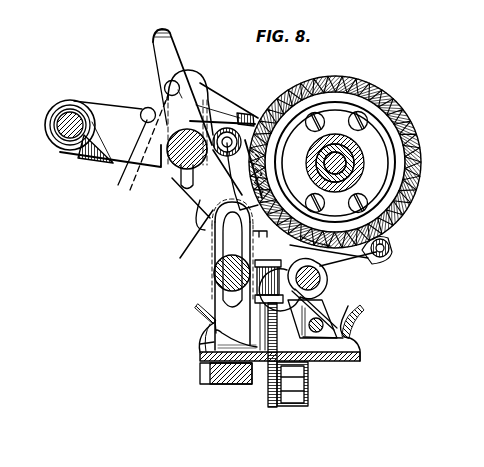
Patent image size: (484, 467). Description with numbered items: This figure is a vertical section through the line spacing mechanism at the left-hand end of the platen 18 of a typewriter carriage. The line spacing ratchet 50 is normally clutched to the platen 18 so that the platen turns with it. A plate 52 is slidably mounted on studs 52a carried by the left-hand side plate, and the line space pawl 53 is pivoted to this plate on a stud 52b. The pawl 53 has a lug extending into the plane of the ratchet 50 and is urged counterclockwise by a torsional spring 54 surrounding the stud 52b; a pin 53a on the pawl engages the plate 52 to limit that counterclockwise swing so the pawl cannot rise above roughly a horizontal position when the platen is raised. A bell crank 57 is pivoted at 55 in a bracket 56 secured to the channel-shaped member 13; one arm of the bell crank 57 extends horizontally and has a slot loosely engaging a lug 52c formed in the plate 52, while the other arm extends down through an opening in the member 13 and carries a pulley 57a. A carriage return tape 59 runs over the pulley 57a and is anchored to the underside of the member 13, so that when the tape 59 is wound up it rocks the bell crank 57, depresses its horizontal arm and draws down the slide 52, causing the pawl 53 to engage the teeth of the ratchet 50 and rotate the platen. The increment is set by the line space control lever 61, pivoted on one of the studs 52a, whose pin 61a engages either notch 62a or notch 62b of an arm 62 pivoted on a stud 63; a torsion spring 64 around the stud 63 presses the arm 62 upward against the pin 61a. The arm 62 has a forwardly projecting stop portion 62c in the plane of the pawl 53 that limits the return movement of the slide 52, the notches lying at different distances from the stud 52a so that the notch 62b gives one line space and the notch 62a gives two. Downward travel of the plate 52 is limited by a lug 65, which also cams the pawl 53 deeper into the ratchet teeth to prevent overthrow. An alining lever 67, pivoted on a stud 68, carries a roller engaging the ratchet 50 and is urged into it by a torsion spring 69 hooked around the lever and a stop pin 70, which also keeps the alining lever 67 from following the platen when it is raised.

The channel-shaped member 13 is at (330, 362).
The platen 18 is at (386, 86).
The line spacing ratchet 50 is at (358, 100).
The plate 52 is at (205, 236).
The studs 52a is at (180, 168).
The stud 52b is at (224, 132).
The lug 52c is at (201, 324).
The line space pawl 53 is at (215, 256).
The pin 53a is at (236, 125).
The torsional spring 54 is at (200, 212).
The pivot 55 is at (308, 293).
The bracket 56 is at (200, 345).
The bell crank 57 is at (266, 388).
The pulley 57a is at (305, 382).
The tape 59 is at (290, 395).
The line space control lever 61 is at (160, 50).
The pin 61a is at (165, 82).
The arm 62 is at (106, 108).
The notch 62a is at (122, 176).
The notch 62b is at (146, 186).
The stop portion 62c is at (250, 110).
The stud 63 is at (68, 128).
The torsion spring 64 is at (60, 112).
The lug 65 is at (266, 238).
The alining lever 67 is at (390, 259).
The stud 68 is at (326, 279).
The torsion spring 69 is at (307, 237).
The stop pin 70 is at (361, 345).